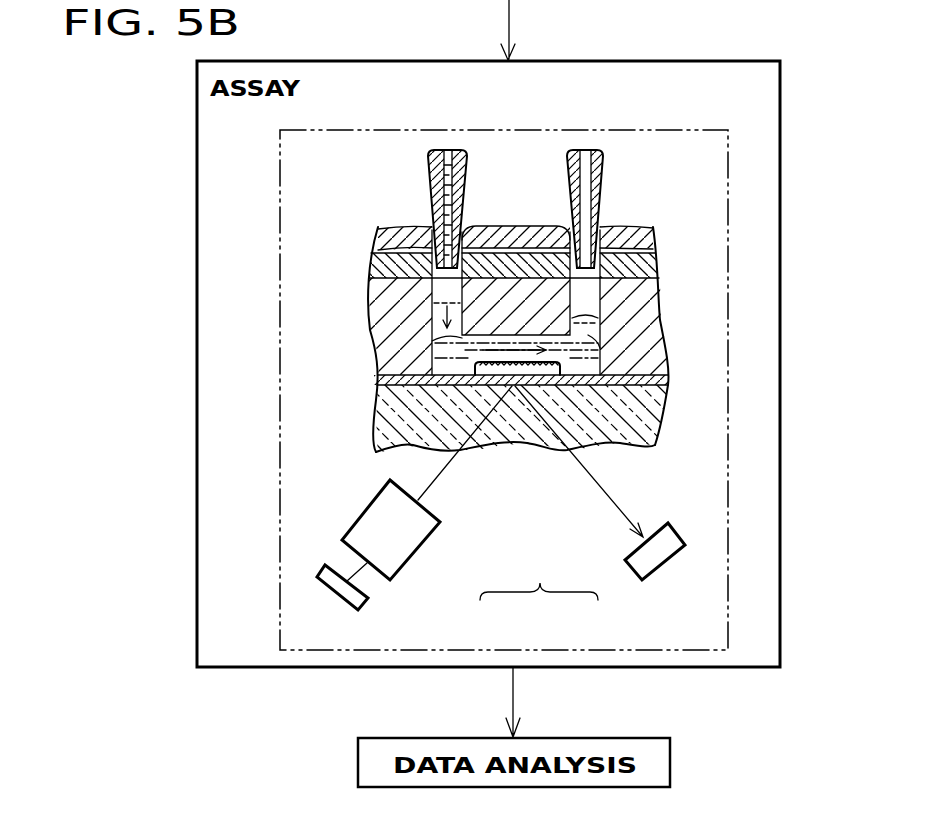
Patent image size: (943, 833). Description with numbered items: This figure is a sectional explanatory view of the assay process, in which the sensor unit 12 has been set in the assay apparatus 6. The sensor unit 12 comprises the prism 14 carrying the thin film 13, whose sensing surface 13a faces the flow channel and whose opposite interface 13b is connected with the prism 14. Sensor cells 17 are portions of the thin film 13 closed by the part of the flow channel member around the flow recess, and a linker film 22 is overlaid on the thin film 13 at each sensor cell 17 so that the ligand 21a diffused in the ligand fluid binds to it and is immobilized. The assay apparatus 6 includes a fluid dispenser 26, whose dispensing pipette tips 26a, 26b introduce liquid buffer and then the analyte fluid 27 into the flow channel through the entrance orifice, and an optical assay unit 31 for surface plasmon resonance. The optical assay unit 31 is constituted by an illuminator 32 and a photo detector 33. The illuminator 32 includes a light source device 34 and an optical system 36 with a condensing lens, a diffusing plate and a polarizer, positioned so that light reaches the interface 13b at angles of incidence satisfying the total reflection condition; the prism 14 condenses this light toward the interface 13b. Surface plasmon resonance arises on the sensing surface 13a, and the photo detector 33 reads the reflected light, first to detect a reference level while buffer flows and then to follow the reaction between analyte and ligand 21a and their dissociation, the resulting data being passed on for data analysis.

The assay apparatus 6 is at (280, 243).
The sensor unit 12 is at (672, 212).
The thin film 13 is at (564, 397).
The sensing surface 13a is at (458, 375).
The interface 13b is at (445, 405).
The prism 14 is at (667, 423).
The sensor cells 17 is at (605, 331).
The ligand 21a is at (445, 339).
The linker film 22 is at (585, 363).
The fluid dispenser 26 is at (416, 181).
The pipette tip 26a is at (460, 225).
The second pipette 26b is at (573, 220).
The analyte fluid 27 is at (615, 300).
The optical assay unit 31 is at (539, 577).
The illuminator 32 is at (413, 570).
The photo detector 33 is at (633, 575).
The light source device 34 is at (325, 565).
The optical system 36 is at (366, 517).